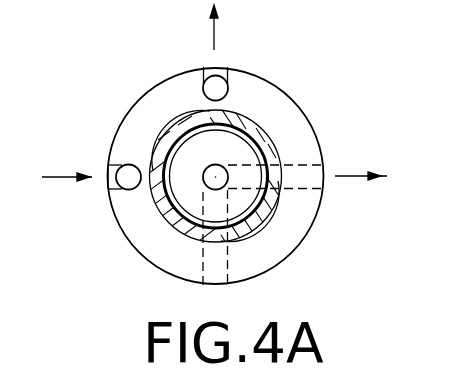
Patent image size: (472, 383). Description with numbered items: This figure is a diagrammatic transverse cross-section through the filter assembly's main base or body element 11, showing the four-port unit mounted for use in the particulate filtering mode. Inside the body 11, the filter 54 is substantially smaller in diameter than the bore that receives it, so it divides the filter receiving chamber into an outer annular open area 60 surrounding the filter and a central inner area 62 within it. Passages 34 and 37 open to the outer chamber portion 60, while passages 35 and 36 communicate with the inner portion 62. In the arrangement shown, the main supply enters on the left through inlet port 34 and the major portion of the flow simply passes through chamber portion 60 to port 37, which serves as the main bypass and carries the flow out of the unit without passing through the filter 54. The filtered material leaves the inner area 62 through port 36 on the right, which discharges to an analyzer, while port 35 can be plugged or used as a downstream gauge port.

The main base or body element 11 is at (120, 90).
The outer annular open area 60 is at (278, 105).
The filter 54 is at (272, 207).
The central inner area 62 is at (188, 195).
The port 37 is at (204, 58).
The inlet port 34 is at (100, 187).
The port 36 is at (334, 163).
The port 35 is at (228, 293).